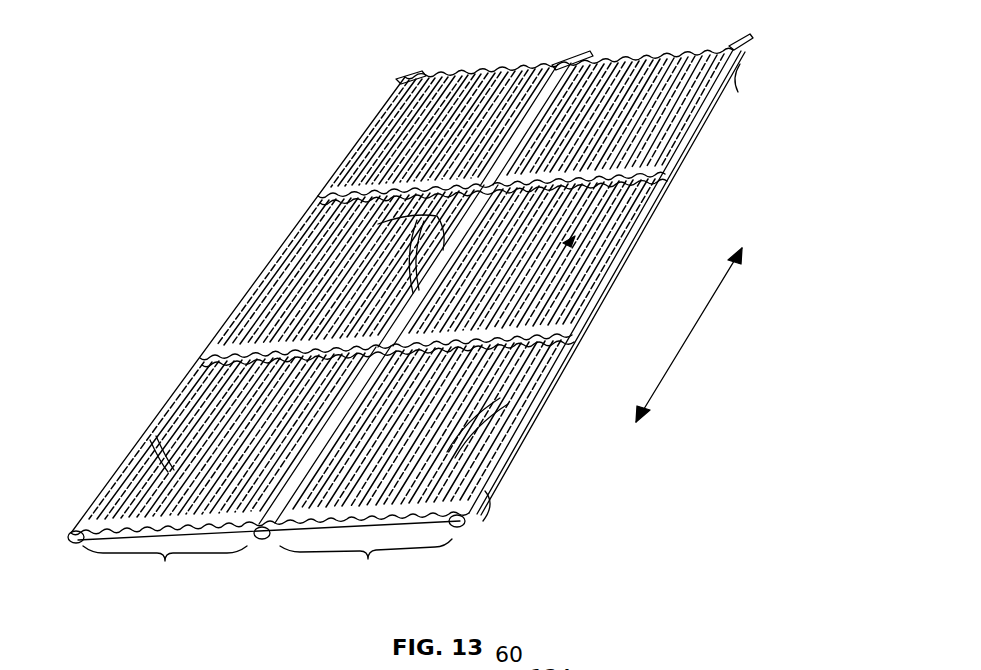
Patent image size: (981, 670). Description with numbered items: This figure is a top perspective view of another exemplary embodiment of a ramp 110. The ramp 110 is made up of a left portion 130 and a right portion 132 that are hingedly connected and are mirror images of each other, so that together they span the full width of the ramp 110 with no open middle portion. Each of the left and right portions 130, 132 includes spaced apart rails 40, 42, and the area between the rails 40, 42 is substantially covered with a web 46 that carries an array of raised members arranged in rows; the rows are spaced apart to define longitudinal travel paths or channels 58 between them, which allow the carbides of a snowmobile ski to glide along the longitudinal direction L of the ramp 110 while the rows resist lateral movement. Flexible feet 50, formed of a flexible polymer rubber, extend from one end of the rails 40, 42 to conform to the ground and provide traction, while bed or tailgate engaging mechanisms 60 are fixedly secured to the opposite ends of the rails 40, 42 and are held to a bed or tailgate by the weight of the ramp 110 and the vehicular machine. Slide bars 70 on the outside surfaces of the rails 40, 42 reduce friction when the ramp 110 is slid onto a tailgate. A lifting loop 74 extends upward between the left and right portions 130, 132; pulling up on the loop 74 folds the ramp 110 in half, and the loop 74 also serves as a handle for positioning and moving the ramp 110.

The ramp 110 is at (256, 210).
The rail 40 is at (349, 158).
The rail 42 is at (553, 66).
The web 46 is at (563, 243).
The flexible feet 50 is at (76, 544).
The travel paths or channels 58 is at (165, 462).
The bed or tailgate engaging mechanisms 60 is at (406, 70).
The slide bars 70 is at (738, 88).
The lifting loop 74 is at (385, 224).
The left portion 130 is at (165, 571).
The right portion 132 is at (366, 565).
The longitudinal direction L is at (698, 334).